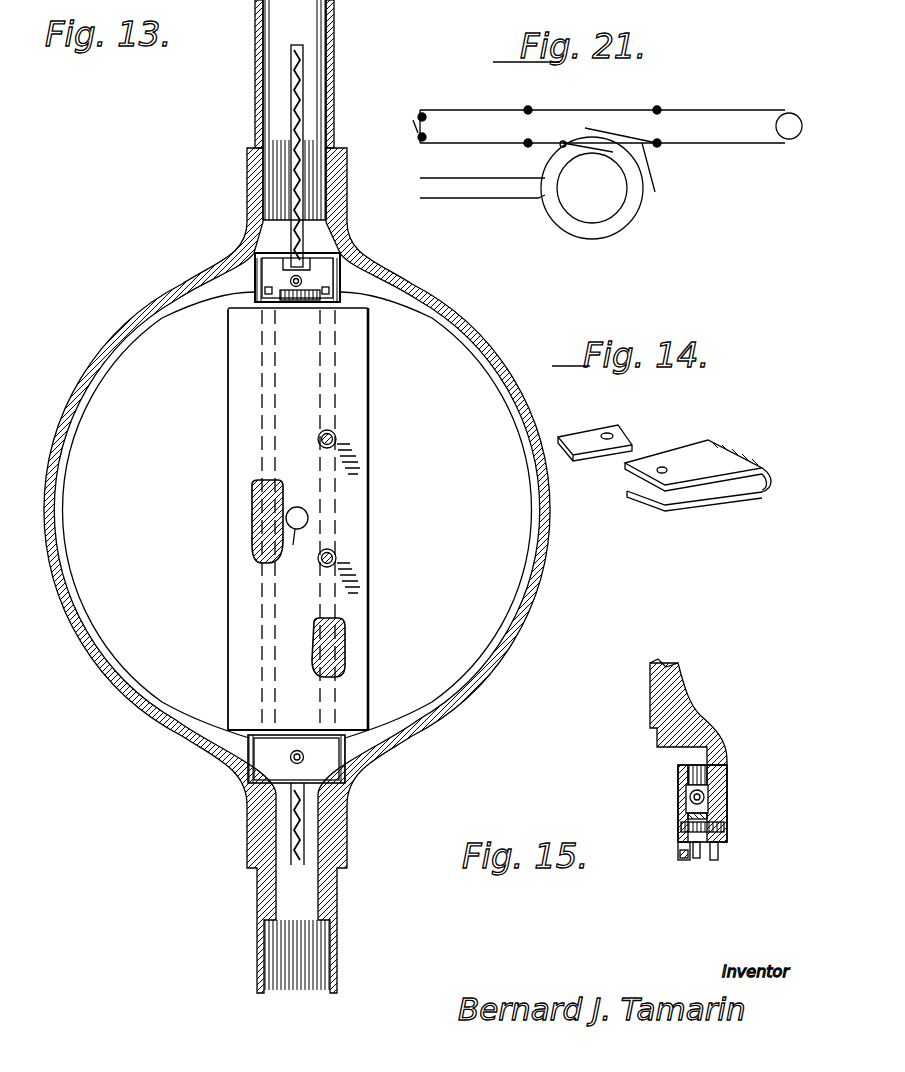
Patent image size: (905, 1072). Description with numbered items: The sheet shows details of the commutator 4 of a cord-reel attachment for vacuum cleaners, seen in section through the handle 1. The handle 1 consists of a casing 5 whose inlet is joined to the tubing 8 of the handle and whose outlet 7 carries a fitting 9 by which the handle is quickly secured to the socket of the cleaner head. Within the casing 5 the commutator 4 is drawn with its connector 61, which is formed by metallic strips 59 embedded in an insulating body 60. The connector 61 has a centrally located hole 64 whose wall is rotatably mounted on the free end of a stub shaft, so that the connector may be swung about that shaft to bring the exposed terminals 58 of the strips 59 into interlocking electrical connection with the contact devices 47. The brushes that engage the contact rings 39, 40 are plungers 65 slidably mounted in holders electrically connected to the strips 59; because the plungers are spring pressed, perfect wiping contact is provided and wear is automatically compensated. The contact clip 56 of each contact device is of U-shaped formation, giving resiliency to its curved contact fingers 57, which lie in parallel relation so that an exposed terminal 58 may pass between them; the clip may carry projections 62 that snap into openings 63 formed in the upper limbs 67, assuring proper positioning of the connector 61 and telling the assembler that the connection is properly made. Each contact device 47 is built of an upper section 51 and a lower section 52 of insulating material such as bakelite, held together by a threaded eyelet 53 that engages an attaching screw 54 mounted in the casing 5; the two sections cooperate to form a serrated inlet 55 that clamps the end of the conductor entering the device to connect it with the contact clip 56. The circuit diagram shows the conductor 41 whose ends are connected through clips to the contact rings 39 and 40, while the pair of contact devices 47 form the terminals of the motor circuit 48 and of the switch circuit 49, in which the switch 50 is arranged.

In FIG. 13, the handle 1 is at (335, 127).
In FIG. 13, the commutator 4 is at (357, 500).
In FIG. 13, the casing 5 is at (137, 712).
In FIG. 15, the casing 5 is at (715, 748).
In FIG. 13, the outlet 7 is at (288, 883).
In FIG. 13, the tubing 8 is at (253, 112).
In FIG. 13, the fitting 9 is at (338, 912).
In FIG. 21, the contact ring 39 is at (622, 211).
In FIG. 21, the contact ring 40 is at (617, 230).
In FIG. 21, the conductor 41 is at (497, 200).
In FIG. 13, the contact device 47 is at (337, 283).
In FIG. 15, the contact device 47 is at (718, 778).
In FIG. 21, the motor circuit 48 is at (697, 108).
In FIG. 21, the switch circuit 49 is at (493, 108).
In FIG. 21, the switch 50 is at (415, 126).
In FIG. 13, the upper section 51 is at (252, 748).
In FIG. 15, the upper section 51 is at (718, 852).
In FIG. 13, the lower section 52 is at (262, 298).
In FIG. 15, the lower section 52 is at (680, 855).
In FIG. 13, the eyelet 53 is at (292, 760).
In FIG. 15, the eyelet 53 is at (683, 829).
In FIG. 15, the attaching screw 54 is at (727, 822).
In FIG. 13, the serrated inlet 55 is at (280, 250).
In FIG. 15, the serrated inlet 55 is at (696, 762).
In FIG. 13, the contact clip 56 is at (332, 305).
In FIG. 14, the contact clip 56 is at (699, 452).
In FIG. 15, the contact clip 56 is at (697, 858).
In FIG. 14, the contact fingers 57 is at (690, 492).
In FIG. 14, the exposed terminals 58 is at (593, 457).
In FIG. 13, the metallic strips 59 is at (265, 510).
In FIG. 13, the insulating body 60 is at (366, 395).
In FIG. 13, the connector 61 is at (235, 447).
In FIG. 14, the projections 62 is at (607, 430).
In FIG. 14, the openings 63 is at (662, 468).
In FIG. 13, the hole 64 is at (298, 542).
In FIG. 13, the plungers 65 is at (338, 440).
In FIG. 21, the plungers 65 is at (607, 133).
In FIG. 14, the upper limbs 67 is at (713, 463).